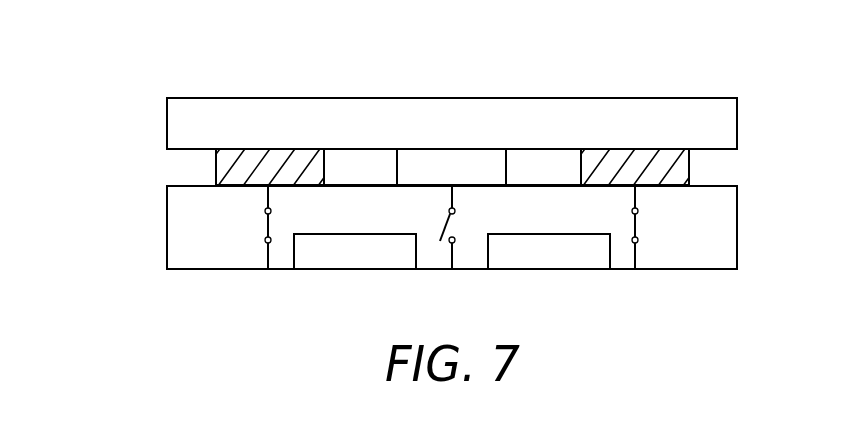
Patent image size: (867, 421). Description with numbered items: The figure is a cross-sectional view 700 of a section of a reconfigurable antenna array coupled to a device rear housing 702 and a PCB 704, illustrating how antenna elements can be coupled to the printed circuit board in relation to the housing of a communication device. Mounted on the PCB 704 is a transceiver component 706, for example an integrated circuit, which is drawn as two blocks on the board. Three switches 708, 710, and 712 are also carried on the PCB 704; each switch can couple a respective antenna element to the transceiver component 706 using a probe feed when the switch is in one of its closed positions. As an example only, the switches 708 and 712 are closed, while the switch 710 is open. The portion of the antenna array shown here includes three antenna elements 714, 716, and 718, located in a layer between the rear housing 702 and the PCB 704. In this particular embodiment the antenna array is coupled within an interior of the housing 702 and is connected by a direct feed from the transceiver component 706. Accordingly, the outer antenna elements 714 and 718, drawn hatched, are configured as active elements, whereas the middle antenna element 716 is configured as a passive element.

The cross-sectional view 700 is at (108, 80).
The rear housing 702 is at (717, 98).
The PCB 704 is at (738, 228).
The transceiver component 706 is at (355, 260).
The switch 708 is at (265, 208).
The switch 710 is at (456, 207).
The switch 712 is at (640, 207).
The antenna element 714 is at (215, 165).
The antenna element 716 is at (441, 160).
The antenna element 718 is at (690, 167).